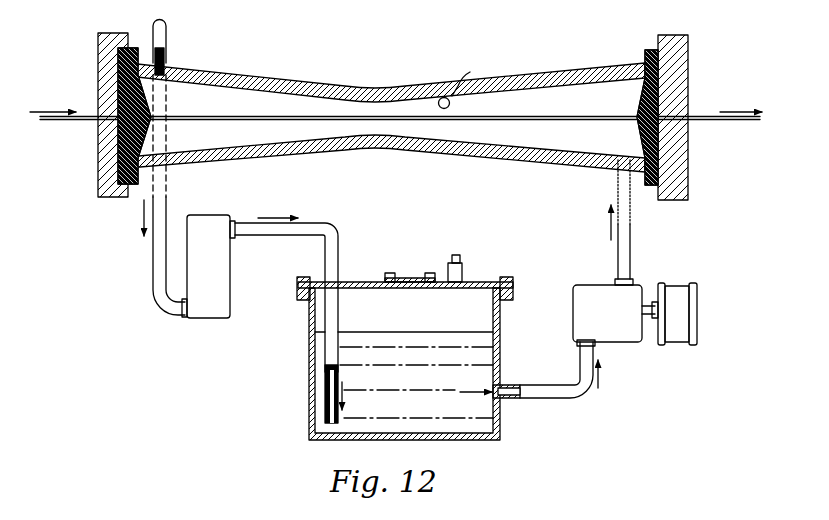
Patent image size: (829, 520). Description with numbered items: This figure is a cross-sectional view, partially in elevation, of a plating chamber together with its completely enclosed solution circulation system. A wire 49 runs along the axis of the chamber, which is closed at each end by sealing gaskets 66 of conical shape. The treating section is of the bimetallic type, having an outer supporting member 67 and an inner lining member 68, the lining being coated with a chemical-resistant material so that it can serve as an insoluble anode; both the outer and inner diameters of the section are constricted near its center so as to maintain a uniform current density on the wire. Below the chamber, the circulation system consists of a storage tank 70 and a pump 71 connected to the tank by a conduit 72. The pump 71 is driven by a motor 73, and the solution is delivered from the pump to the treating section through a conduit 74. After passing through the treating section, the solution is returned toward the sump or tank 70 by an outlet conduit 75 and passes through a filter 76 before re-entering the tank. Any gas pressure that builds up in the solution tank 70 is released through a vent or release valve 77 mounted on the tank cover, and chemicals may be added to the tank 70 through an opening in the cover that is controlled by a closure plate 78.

The wire 49 is at (511, 118).
The sealing gasket 66 is at (148, 97).
The outer supporting member 67 is at (356, 80).
The inner lining member 68 is at (467, 82).
The storage tank 70 is at (497, 425).
The pump 71 is at (625, 343).
The conduit 72 is at (570, 398).
The motor 73 is at (680, 281).
The conduit 74 is at (628, 215).
The outlet conduit 75 is at (170, 31).
The filter 76 is at (205, 319).
The vent or release valve 77 is at (462, 262).
The closure plate 78 is at (405, 277).